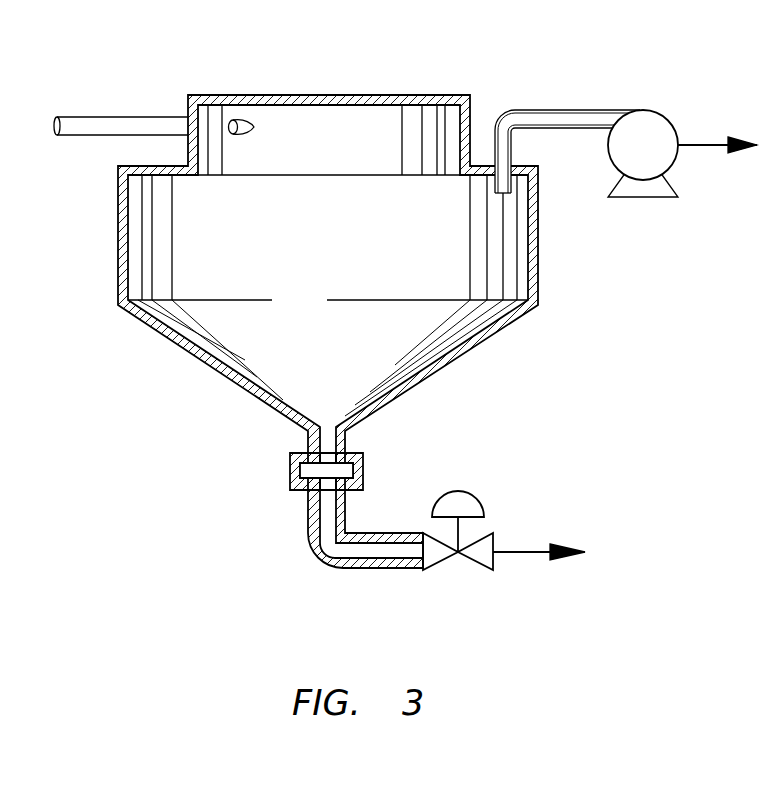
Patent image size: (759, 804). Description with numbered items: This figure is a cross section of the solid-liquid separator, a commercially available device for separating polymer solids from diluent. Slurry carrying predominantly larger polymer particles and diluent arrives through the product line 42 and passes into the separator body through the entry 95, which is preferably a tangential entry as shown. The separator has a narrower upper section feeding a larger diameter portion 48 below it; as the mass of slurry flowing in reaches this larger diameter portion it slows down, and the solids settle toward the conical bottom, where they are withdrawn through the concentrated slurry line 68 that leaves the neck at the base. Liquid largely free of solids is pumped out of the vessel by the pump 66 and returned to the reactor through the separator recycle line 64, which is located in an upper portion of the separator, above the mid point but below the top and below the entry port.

The product line 42 is at (127, 117).
The collection chamber 48 is at (313, 269).
The separator recycle line 64 is at (706, 143).
The pump 66 is at (657, 125).
The concentrated slurry line 68 is at (312, 552).
The entry 95 is at (243, 136).